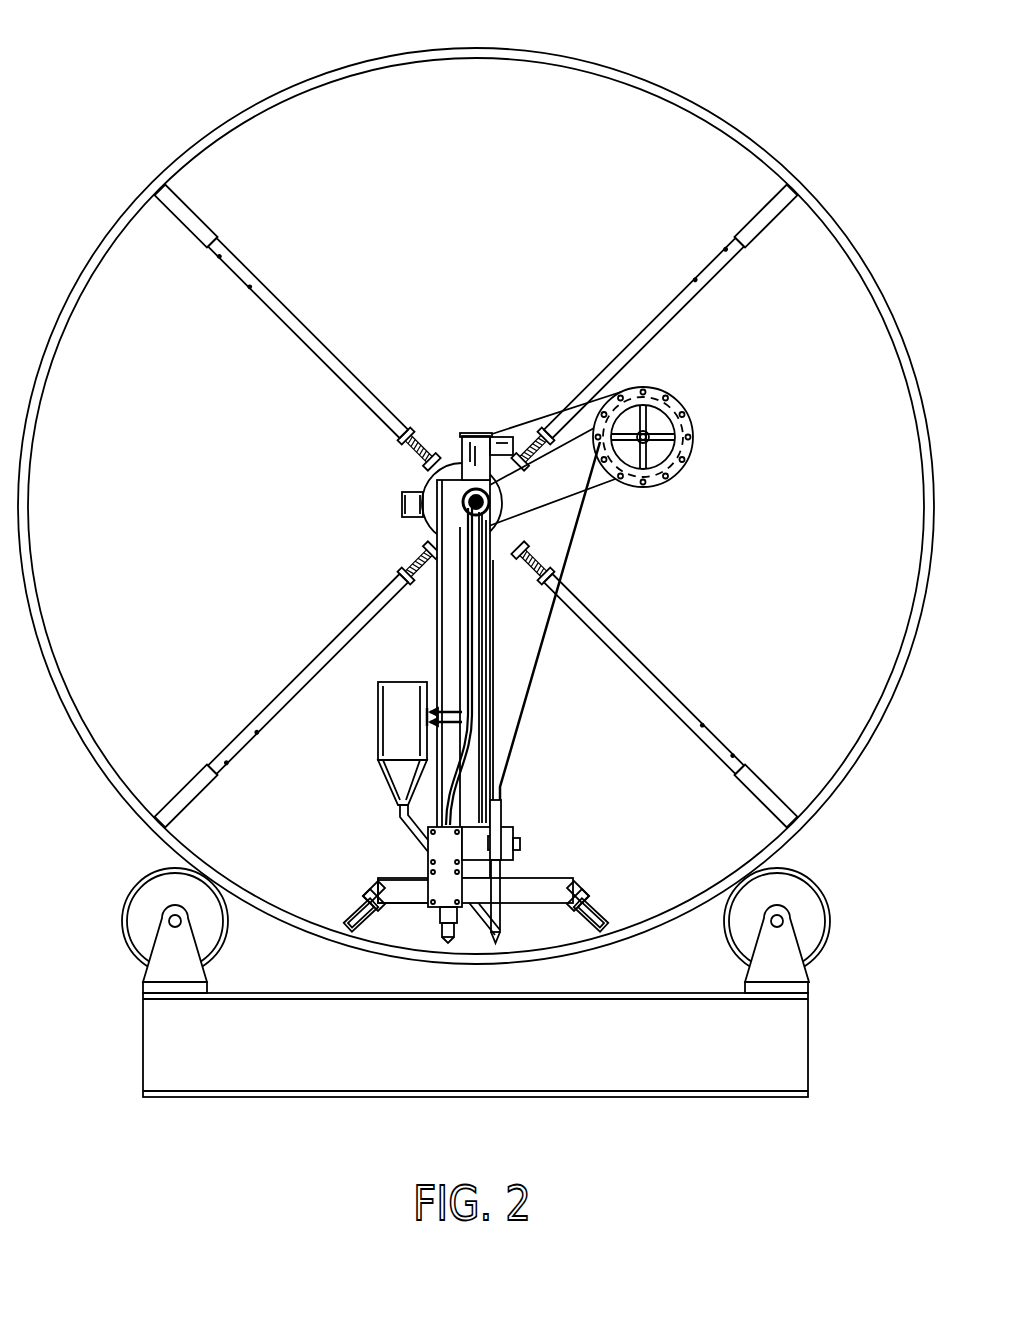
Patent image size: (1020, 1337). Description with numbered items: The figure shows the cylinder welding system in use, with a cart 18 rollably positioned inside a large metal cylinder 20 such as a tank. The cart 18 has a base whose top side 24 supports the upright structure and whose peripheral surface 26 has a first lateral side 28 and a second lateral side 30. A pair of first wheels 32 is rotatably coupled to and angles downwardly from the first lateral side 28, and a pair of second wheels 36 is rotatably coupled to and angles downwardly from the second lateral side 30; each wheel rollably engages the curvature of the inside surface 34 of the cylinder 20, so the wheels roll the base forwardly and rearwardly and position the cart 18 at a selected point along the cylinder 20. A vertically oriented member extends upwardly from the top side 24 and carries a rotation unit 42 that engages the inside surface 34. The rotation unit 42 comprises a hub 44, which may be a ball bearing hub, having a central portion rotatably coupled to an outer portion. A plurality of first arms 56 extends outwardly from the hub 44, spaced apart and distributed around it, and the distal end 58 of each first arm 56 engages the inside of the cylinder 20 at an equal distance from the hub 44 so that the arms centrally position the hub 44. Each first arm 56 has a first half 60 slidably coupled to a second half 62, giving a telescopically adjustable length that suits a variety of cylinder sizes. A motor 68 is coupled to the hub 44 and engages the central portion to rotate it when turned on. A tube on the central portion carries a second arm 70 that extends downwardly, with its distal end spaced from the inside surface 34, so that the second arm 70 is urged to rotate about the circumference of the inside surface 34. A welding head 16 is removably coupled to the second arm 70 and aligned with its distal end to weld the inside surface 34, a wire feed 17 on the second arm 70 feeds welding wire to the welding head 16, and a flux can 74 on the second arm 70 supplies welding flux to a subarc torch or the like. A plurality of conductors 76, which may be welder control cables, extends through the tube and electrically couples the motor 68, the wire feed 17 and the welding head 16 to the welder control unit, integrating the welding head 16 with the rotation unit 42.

The welding head 16 is at (522, 933).
The wire feed 17 is at (692, 421).
The cart 18 is at (479, 873).
The cylinder 20 is at (476, 489).
The top side 24 is at (407, 878).
The peripheral surface 26 is at (377, 893).
The first lateral side 28 is at (366, 899).
The second lateral side 30 is at (590, 876).
The first wheels 32 is at (348, 927).
The inside surface 34 is at (607, 80).
The second wheels 36 is at (603, 920).
The rotation unit 42 is at (558, 375).
The hub 44 is at (428, 484).
The first arms 56 is at (476, 506).
The distal end 58 is at (248, 300).
The first half 60 is at (318, 325).
The second half 62 is at (273, 327).
The motor 68 is at (402, 507).
The second arm 70 is at (143, 1045).
The flux can 74 is at (378, 700).
The conductors 76 is at (487, 567).